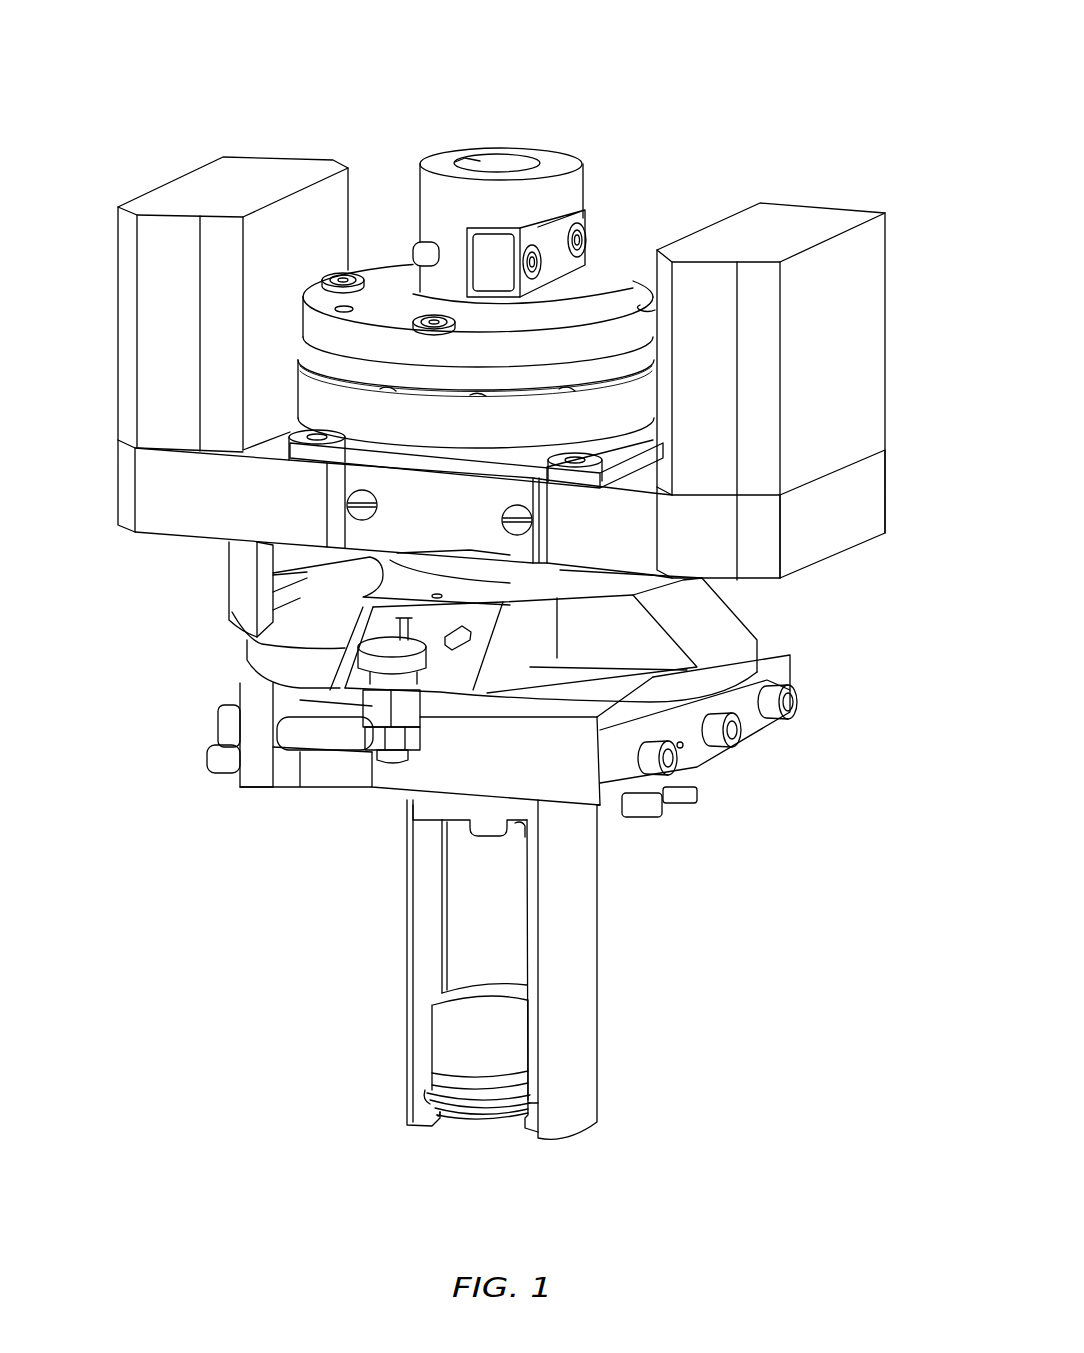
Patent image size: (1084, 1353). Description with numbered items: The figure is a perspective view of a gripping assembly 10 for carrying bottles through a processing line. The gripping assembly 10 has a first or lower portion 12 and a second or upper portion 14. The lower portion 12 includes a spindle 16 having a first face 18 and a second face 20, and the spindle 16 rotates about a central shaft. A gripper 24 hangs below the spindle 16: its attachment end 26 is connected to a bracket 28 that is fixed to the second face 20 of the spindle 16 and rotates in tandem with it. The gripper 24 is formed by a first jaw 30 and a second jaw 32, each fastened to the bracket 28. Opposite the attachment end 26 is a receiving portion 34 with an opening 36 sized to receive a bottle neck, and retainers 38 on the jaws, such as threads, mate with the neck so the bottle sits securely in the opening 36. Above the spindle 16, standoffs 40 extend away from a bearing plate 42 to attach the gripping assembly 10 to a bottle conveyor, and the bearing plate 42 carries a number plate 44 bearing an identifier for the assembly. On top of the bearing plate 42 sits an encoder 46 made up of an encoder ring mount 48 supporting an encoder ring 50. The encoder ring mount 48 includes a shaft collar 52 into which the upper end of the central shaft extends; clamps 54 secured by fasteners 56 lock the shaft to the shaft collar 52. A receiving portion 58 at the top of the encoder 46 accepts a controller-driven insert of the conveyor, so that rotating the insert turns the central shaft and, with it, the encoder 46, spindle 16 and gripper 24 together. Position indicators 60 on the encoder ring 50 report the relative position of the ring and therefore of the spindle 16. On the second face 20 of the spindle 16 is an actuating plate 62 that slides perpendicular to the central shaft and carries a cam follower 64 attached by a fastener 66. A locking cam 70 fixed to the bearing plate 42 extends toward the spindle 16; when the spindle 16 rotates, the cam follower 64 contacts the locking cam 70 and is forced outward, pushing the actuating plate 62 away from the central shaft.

The gripping assembly 10 is at (148, 62).
The first or lower portion 12 is at (152, 785).
The second or upper portion 14 is at (105, 487).
The spindle 16 is at (772, 628).
The first face 18 is at (634, 585).
The second face 20 is at (552, 720).
The gripper 24 is at (365, 1160).
The attachment end 26 is at (400, 800).
The bracket 28 is at (200, 717).
The first jaw 30 is at (398, 950).
The second jaw 32 is at (600, 970).
The receiving portion 34 is at (497, 1152).
The opening 36 is at (480, 1130).
The retainers 38 is at (485, 982).
The standoffs 40 is at (125, 190).
The bearing plate 42 is at (895, 483).
The number plate 44 is at (445, 523).
The encoder 46 is at (375, 163).
The encoder ring mount 48 is at (630, 262).
The encoder ring 50 is at (442, 430).
The shaft collar 52 is at (568, 126).
The clamps 54 is at (556, 270).
The fasteners 56 is at (592, 225).
The receiving portion 58 is at (485, 152).
The position indicators 60 is at (388, 396).
The actuating plate 62 is at (445, 722).
The cam follower 64 is at (440, 663).
The fastener 66 is at (355, 735).
The locking cam 70 is at (218, 583).